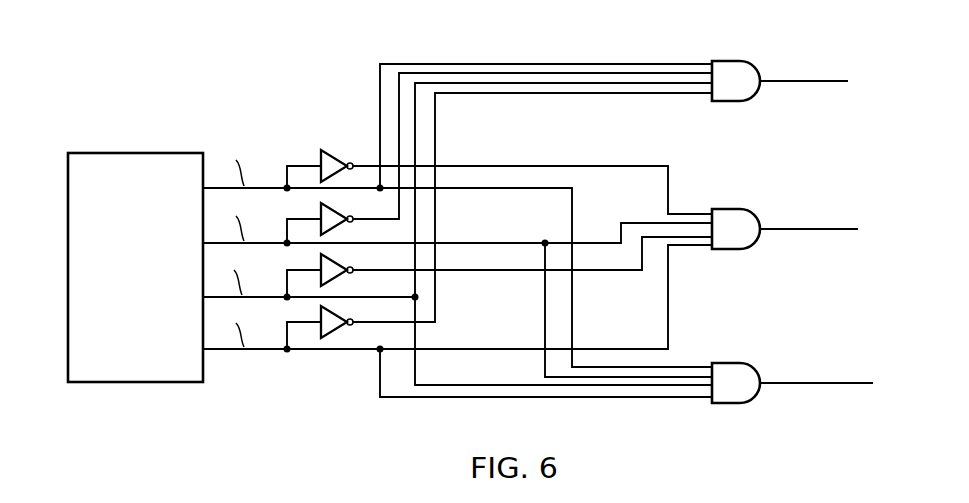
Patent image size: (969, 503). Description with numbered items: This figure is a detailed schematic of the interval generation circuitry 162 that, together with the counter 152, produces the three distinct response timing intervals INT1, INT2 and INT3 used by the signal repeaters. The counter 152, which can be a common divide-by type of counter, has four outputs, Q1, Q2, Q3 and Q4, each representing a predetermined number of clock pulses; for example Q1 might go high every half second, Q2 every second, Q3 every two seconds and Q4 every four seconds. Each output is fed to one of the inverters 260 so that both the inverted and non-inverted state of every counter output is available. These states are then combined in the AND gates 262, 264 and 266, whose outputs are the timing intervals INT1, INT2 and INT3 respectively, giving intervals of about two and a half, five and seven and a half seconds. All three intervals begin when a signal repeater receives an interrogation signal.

The counter 152 is at (135, 152).
The interval generation circuitry 162 is at (498, 427).
The inverters 260 is at (355, 232).
The AND gate 262 is at (730, 61).
The AND gate 264 is at (724, 209).
The AND gate 266 is at (729, 363).